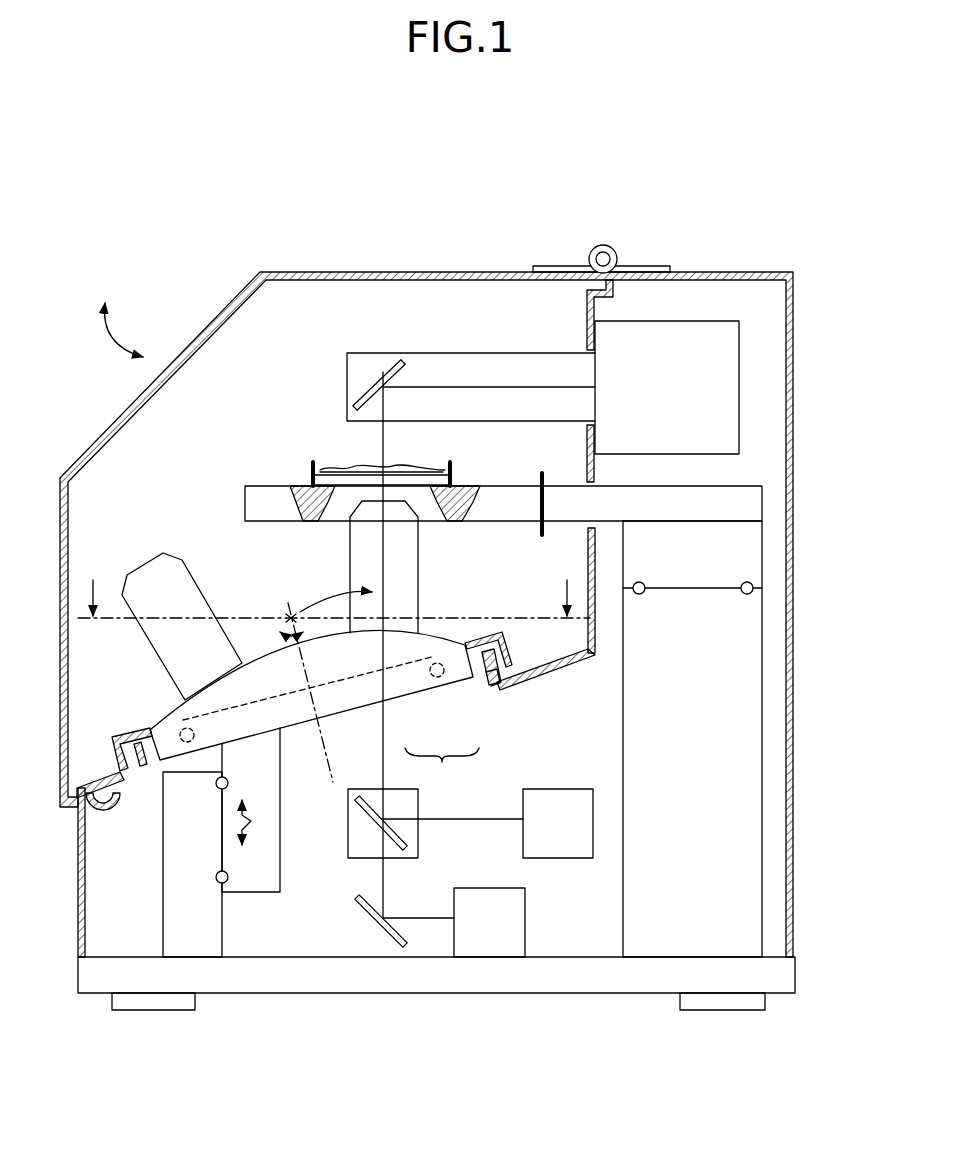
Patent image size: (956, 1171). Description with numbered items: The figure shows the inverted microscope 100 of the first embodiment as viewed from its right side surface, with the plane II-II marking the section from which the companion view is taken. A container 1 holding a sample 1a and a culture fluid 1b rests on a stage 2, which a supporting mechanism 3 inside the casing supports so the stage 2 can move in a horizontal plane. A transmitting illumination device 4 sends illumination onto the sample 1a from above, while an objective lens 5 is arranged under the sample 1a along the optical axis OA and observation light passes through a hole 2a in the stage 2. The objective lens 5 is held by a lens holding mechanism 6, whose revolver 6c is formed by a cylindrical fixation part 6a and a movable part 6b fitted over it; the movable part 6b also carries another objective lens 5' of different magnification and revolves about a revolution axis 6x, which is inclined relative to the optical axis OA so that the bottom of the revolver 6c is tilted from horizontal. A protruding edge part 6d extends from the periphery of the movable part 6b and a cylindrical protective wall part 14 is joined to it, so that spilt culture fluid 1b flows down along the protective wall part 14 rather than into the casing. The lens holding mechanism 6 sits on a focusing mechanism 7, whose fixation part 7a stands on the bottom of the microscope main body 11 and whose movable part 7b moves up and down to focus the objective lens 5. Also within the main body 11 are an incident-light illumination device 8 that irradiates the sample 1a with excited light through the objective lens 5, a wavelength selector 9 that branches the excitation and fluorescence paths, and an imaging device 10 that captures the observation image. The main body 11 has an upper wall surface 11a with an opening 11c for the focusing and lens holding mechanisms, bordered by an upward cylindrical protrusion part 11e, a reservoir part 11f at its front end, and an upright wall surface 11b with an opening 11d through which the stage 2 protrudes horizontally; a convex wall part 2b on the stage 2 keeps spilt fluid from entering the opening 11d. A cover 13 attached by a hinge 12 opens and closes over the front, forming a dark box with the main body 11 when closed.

The inverted microscope 100 is at (440, 160).
The container 1 is at (312, 470).
The sample 1a is at (325, 470).
The culture fluid 1b is at (358, 467).
The stage 2 is at (245, 500).
The hole 2a is at (340, 514).
The convex wall part 2b is at (540, 470).
The supporting mechanism 3 is at (762, 651).
The transmitting illumination device 4 is at (463, 351).
The objective lens 5 is at (406, 577).
The another objective lens 5' is at (178, 603).
The lens holding mechanism 6 is at (153, 706).
The fixation part 6a is at (428, 683).
The movable part 6b is at (466, 686).
The revolver 6c is at (442, 768).
The protruding edge part 6d is at (497, 638).
The revolution axis 6x is at (288, 612).
The focusing mechanism 7 is at (251, 842).
The fixation part 7a is at (222, 942).
The movable part 7b is at (260, 893).
The incident-light illumination device 8 is at (525, 924).
The wavelength selector 9 is at (418, 840).
The imaging device 10 is at (558, 789).
The microscope main body 11 is at (795, 527).
The upper wall surface 11a is at (536, 680).
The upright wall surface 11b is at (598, 626).
The opening 11c is at (352, 718).
The opening 11d is at (594, 483).
The protrusion part 11e is at (497, 674).
The reservoir part 11f is at (110, 810).
The hinge 12 is at (603, 245).
The cover 13 is at (374, 272).
The protective wall part 14 is at (508, 651).
The optical axis OA is at (388, 578).
The section plane II- II is at (334, 586).